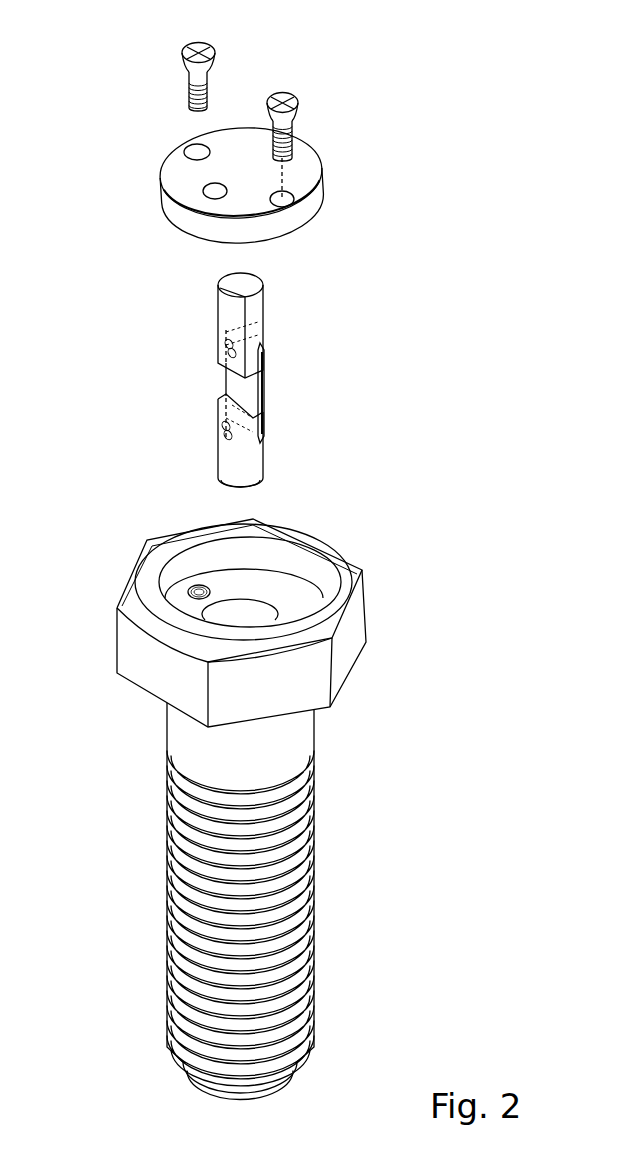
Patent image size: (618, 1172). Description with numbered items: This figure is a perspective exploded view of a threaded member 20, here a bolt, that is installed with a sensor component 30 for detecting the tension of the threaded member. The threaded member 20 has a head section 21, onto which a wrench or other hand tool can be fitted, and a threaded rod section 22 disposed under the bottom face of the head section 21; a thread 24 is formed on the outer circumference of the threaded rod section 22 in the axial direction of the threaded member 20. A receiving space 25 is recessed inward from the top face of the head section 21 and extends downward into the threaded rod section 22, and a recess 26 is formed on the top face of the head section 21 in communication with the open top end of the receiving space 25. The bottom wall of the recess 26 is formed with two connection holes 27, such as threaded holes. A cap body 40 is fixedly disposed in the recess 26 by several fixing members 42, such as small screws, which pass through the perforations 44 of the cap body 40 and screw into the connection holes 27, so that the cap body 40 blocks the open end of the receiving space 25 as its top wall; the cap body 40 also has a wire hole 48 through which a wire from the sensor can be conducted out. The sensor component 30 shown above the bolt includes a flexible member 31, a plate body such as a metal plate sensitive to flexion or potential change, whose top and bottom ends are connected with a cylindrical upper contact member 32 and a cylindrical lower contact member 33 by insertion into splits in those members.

The threaded member 20 is at (273, 771).
The head section 21 is at (261, 584).
The threaded rod section 22 is at (249, 901).
The thread 24 is at (182, 1005).
The receiving space 25 is at (262, 615).
The recess 26 is at (290, 560).
The connection holes 27 is at (188, 588).
The sensor component 30 is at (253, 382).
The flexible member 31 is at (265, 392).
The upper contact member 32 is at (225, 305).
The lower contact member 33 is at (228, 455).
The cap body 40 is at (255, 197).
The fixing members 42 is at (182, 77).
The perforations 44 is at (186, 154).
The wire hole 48 is at (205, 195).